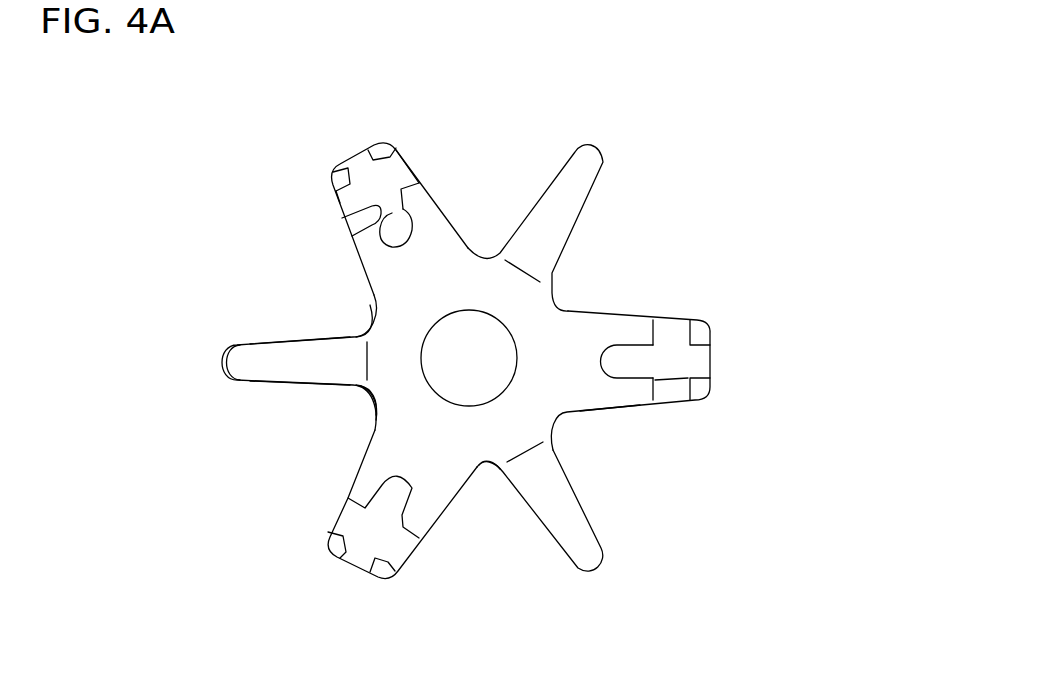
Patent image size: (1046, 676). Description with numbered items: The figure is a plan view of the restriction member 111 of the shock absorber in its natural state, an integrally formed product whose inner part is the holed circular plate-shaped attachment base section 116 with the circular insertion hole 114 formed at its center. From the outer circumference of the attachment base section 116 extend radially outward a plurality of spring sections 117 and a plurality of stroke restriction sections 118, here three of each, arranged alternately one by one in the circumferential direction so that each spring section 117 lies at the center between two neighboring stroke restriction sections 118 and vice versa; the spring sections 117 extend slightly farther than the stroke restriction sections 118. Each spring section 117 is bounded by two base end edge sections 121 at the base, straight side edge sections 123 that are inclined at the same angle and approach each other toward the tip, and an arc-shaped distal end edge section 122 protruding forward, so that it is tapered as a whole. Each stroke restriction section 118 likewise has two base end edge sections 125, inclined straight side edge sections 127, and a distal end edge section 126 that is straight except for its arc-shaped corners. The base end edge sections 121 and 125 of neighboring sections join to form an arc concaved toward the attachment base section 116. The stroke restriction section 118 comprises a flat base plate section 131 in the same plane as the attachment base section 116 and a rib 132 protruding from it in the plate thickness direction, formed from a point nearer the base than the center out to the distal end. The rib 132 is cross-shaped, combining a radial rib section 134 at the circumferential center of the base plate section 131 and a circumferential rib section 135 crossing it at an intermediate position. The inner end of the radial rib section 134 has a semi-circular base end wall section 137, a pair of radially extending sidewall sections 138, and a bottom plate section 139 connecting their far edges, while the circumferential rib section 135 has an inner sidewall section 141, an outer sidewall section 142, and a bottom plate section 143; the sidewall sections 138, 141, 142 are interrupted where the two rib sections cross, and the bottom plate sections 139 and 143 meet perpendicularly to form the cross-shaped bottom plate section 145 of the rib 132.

The restriction member 111 is at (728, 275).
The insertion hole 114 is at (506, 352).
The attachment base section 116 is at (483, 283).
The spring section 117 is at (243, 380).
The stroke restriction section 118 is at (716, 402).
The base end edge section 121 is at (365, 333).
The distal end edge section 122 is at (233, 366).
The side edge section 123 is at (283, 340).
The base end edge section 125 is at (377, 422).
The distal end edge section 126 is at (350, 565).
The side edge section 127 is at (350, 483).
The base plate section 131 is at (613, 393).
The rib 132 is at (722, 350).
The radial rib section 134 is at (635, 368).
The circumferential rib section 135 is at (658, 390).
The base end wall section 137 is at (392, 231).
The sidewall section 138 is at (410, 207).
The bottom plate section 139 is at (398, 228).
The inner sidewall section 141 is at (405, 183).
The outer sidewall section 142 is at (332, 193).
The bottom plate section 143 is at (353, 200).
The bottom plate section 145 is at (360, 167).